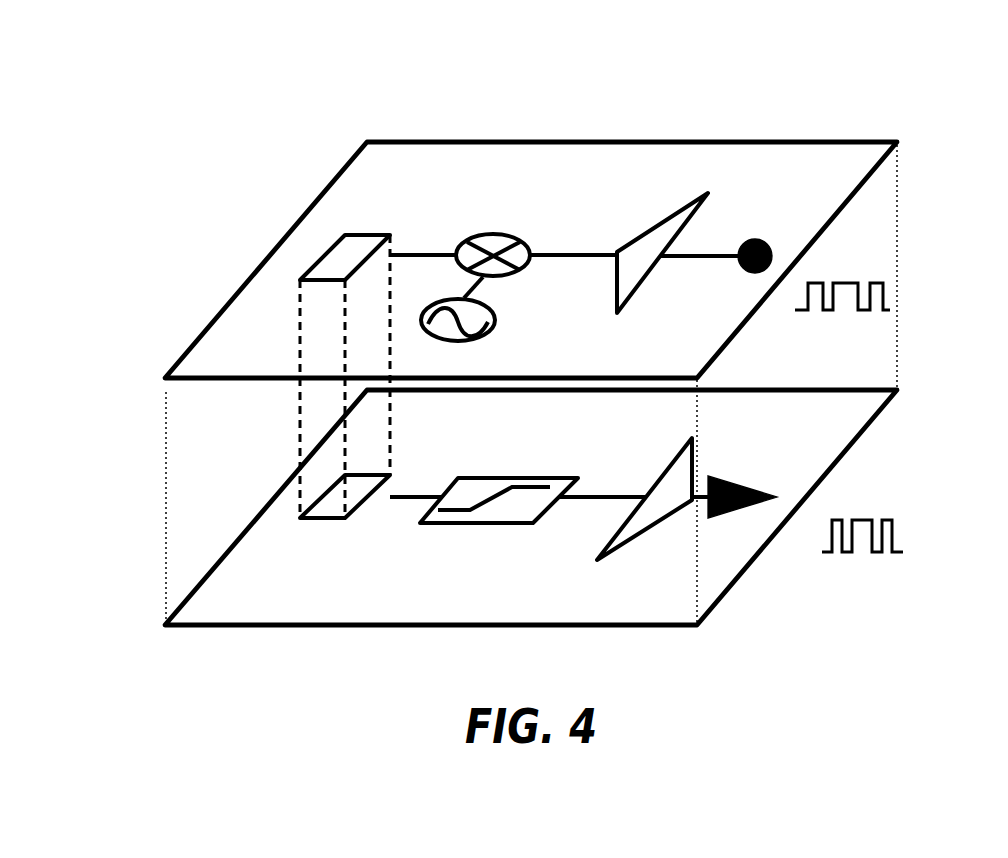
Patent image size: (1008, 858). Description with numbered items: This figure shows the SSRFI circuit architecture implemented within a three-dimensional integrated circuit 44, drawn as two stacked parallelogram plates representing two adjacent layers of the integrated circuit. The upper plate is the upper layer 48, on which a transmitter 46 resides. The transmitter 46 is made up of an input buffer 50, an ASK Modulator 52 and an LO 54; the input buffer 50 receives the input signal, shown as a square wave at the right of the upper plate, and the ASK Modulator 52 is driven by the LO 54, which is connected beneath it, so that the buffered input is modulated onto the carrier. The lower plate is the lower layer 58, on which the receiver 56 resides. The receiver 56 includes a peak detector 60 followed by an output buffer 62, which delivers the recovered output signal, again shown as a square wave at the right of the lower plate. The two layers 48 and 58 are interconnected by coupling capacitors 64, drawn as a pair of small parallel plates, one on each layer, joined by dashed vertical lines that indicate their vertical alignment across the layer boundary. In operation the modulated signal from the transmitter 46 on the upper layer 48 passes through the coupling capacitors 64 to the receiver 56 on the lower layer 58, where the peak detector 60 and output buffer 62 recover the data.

The 3D IC 44 is at (743, 118).
The transmitter 46 is at (601, 267).
The layer n+1 48 is at (278, 245).
The input buffer 50 is at (715, 237).
The ASK Modulator 52 is at (516, 239).
The LO 54 is at (449, 325).
The receiver 56 is at (599, 505).
The layer n 58 is at (238, 537).
The peak detector 60 is at (525, 480).
The output buffer 62 is at (702, 480).
The coupling capacitors 64 is at (322, 490).